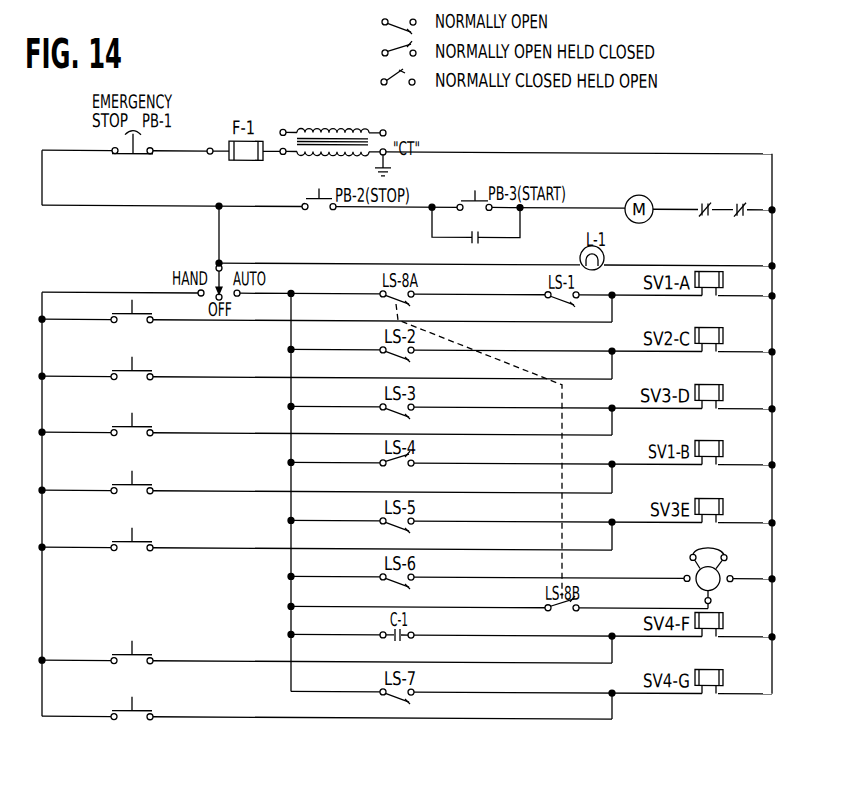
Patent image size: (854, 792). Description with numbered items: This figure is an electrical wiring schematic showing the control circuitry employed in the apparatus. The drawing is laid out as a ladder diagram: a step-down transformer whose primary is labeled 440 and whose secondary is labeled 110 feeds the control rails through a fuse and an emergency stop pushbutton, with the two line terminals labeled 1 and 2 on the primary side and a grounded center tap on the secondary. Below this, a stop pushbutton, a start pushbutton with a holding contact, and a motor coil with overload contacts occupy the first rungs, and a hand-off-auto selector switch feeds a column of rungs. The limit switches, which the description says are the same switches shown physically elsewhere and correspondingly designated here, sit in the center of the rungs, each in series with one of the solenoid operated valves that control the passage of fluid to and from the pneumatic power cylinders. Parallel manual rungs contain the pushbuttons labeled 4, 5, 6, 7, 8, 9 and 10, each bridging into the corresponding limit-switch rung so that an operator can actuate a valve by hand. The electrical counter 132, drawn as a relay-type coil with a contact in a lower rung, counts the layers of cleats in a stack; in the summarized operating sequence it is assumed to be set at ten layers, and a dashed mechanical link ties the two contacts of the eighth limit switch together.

The electrical counter 132 is at (718, 578).
The 110 VAC transformer secondary 110 is at (333, 162).
The 440-220 VAC transformer primary 440 is at (338, 115).
The line terminal L1 1 is at (283, 128).
The line terminal L2 2 is at (385, 128).
The pushbutton PB 4 is at (132, 308).
The pushbutton PB 5 is at (132, 365).
The pushbutton PB 6 is at (132, 421).
The pushbutton PB 7 is at (132, 479).
The pushbutton PB 8 is at (132, 536).
The pushbutton PB 9 is at (132, 649).
The pushbutton PB 10 is at (132, 705).